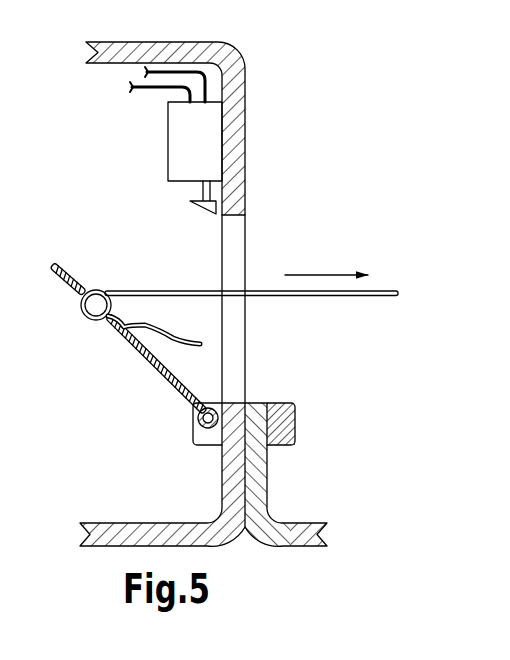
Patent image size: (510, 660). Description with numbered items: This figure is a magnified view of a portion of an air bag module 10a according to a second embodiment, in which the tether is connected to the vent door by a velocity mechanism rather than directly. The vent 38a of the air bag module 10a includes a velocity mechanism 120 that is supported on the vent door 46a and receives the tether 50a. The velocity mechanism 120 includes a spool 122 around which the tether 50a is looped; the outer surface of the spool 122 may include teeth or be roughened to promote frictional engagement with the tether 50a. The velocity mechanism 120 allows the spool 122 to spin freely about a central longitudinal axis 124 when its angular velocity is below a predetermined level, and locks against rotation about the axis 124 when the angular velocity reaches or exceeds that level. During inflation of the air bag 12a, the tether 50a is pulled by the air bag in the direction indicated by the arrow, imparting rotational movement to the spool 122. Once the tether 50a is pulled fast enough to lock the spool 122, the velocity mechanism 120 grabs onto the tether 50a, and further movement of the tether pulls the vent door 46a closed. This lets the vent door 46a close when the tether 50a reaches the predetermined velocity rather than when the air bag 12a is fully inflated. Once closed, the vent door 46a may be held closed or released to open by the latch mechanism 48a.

The air bag module 10a is at (88, 125).
The air bag 12a is at (299, 538).
The vent 38a is at (96, 414).
The vent door 46a is at (62, 262).
The latch mechanism 48a is at (133, 147).
The tether 50a is at (297, 294).
The velocity mechanism 120 is at (84, 332).
The spool 122 is at (106, 299).
The central longitudinal axis 124 is at (96, 305).